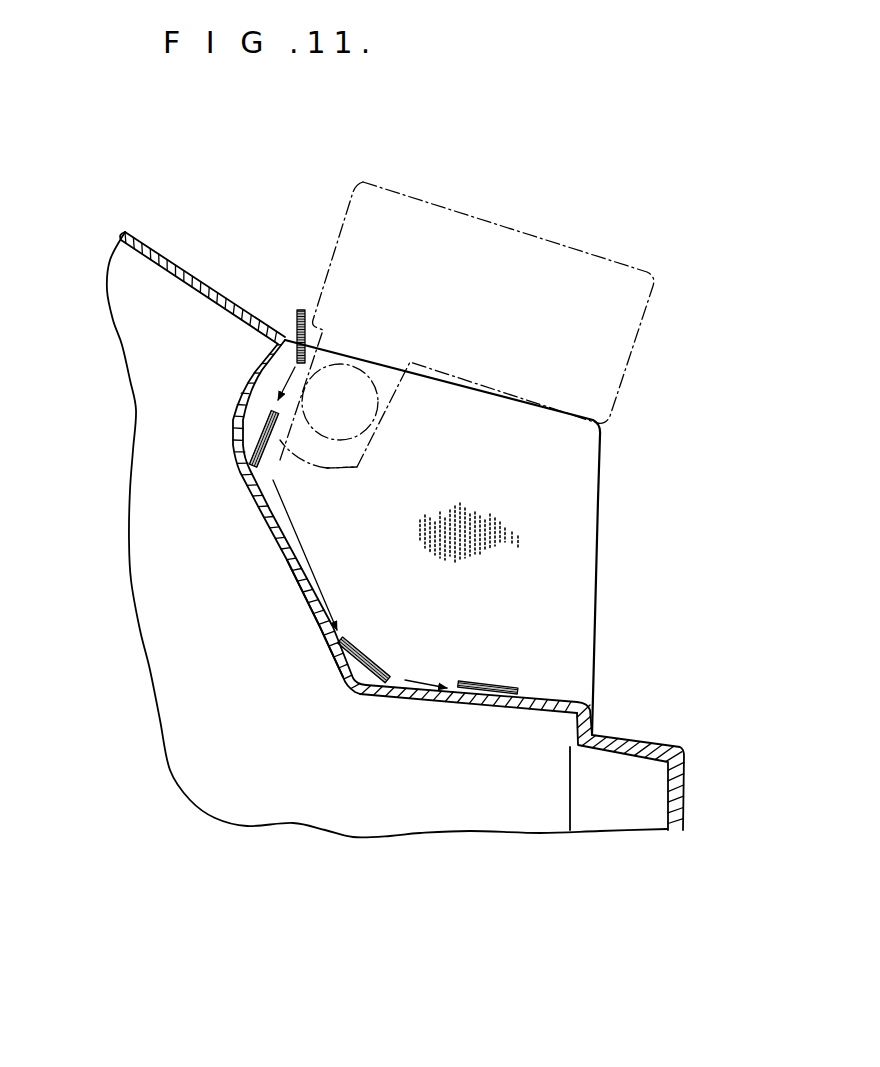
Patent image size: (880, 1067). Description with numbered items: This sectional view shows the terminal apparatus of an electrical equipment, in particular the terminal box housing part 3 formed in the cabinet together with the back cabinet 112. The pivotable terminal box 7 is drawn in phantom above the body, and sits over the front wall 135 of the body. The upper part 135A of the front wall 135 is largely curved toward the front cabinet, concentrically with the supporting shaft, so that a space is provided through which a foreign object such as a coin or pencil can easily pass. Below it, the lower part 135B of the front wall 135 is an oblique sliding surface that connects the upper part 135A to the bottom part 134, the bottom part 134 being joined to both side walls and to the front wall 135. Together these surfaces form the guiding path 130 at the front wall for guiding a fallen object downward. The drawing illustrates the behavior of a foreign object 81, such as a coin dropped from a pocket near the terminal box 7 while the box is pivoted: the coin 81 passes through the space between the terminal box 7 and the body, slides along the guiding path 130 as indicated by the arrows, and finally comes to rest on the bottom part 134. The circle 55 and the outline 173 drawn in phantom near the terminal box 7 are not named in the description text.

The terminal box housing part 3 is at (547, 533).
The terminal box 7 is at (528, 228).
The roller 55 is at (378, 400).
The foreign object 81 is at (302, 310).
The back cabinet 112 is at (683, 813).
The guiding path 130 is at (283, 560).
The bottom part 134 is at (508, 714).
The front wall 135 is at (257, 503).
The upper part of the front wall 135A is at (243, 392).
The lower part of the front wall 135B is at (320, 647).
The guide 173 is at (363, 453).